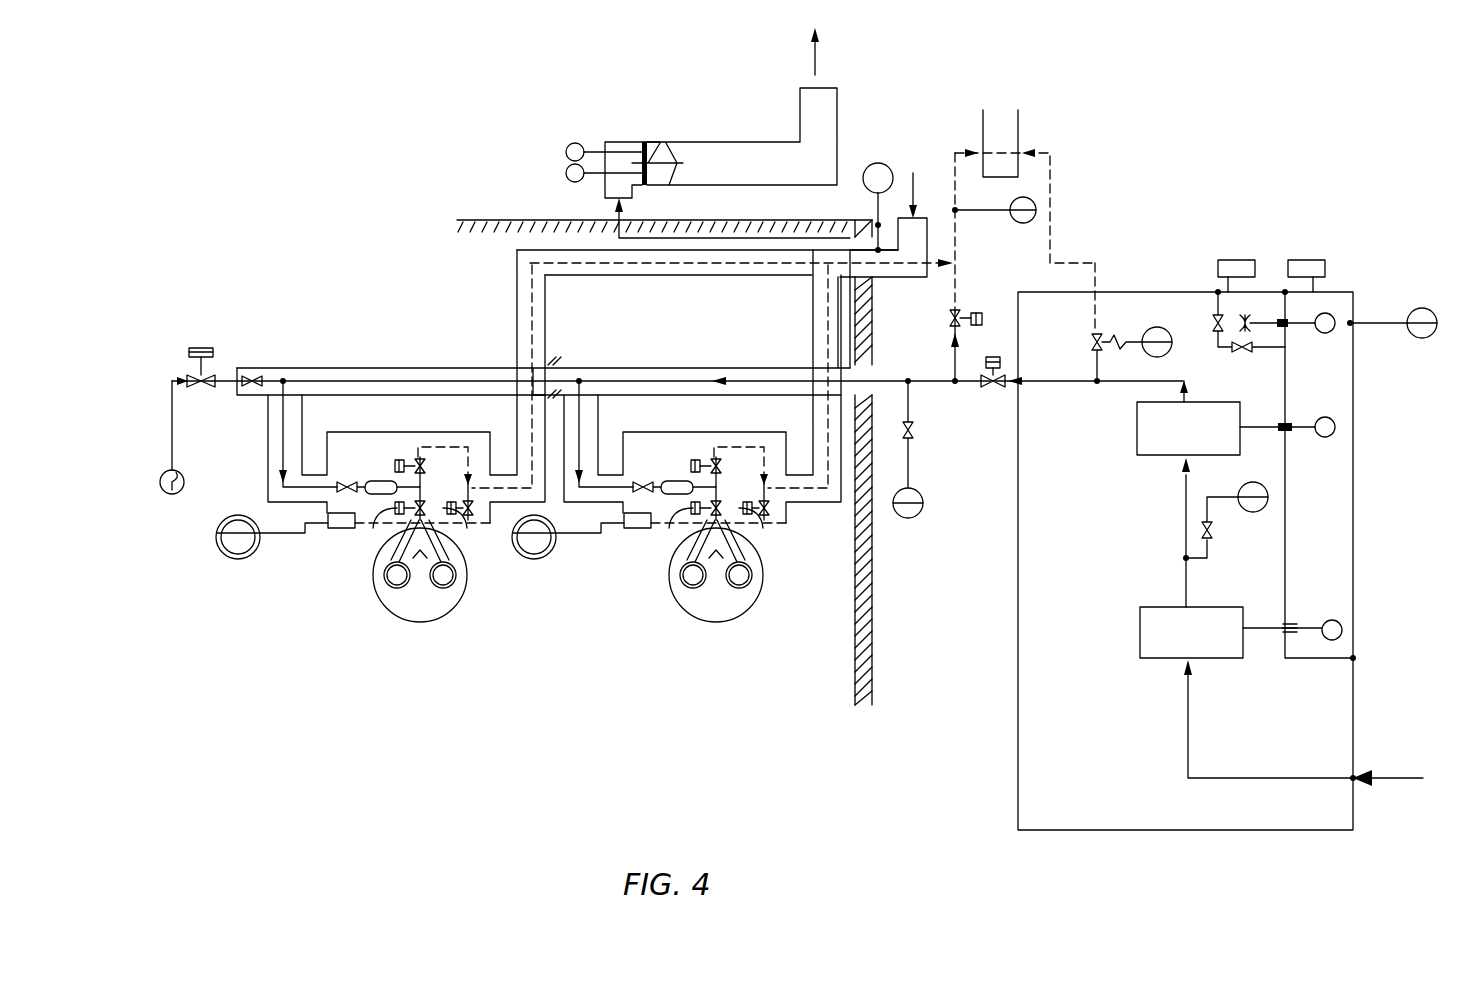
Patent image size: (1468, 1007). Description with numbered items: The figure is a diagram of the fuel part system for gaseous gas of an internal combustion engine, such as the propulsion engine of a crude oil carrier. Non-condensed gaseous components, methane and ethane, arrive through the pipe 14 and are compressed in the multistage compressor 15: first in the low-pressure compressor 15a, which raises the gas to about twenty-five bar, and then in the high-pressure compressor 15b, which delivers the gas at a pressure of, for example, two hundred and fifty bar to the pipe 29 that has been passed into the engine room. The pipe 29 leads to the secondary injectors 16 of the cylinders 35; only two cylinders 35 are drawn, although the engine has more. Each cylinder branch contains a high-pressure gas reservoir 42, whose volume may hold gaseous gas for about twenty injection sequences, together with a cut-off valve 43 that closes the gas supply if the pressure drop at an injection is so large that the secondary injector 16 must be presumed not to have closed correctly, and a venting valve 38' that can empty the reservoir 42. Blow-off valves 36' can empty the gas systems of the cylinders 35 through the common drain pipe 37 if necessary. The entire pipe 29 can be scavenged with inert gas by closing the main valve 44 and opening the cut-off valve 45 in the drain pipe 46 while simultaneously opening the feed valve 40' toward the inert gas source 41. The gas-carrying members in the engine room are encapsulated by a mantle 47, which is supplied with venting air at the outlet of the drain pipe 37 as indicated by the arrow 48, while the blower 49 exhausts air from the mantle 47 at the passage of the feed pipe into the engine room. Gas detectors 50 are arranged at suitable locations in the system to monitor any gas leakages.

The pipe 14 is at (1393, 778).
The multistage compressor 15 is at (1366, 462).
The low-pressure compressor 15a is at (1140, 630).
The high-pressure compressor 15b is at (1137, 428).
The secondary injector 16 is at (392, 578).
The pipe 29 is at (279, 435).
The cylinder 35 is at (417, 607).
The blow-off valve 36' is at (637, 547).
The common drain pipe 37 is at (532, 310).
The venting valve 38' is at (584, 483).
The feed valve 40' is at (224, 394).
The inert gas source 41 is at (171, 460).
The high-pressure gas reservoir 42 is at (383, 480).
The cut-off valve 43 is at (380, 527).
The main valve 44 is at (998, 390).
The cut-off valve 45 is at (975, 313).
The drain pipe 46 is at (955, 357).
The mantle 47 is at (445, 366).
The arrow 48 is at (967, 193).
The blower 49 is at (648, 155).
The gas detector 50 is at (238, 550).